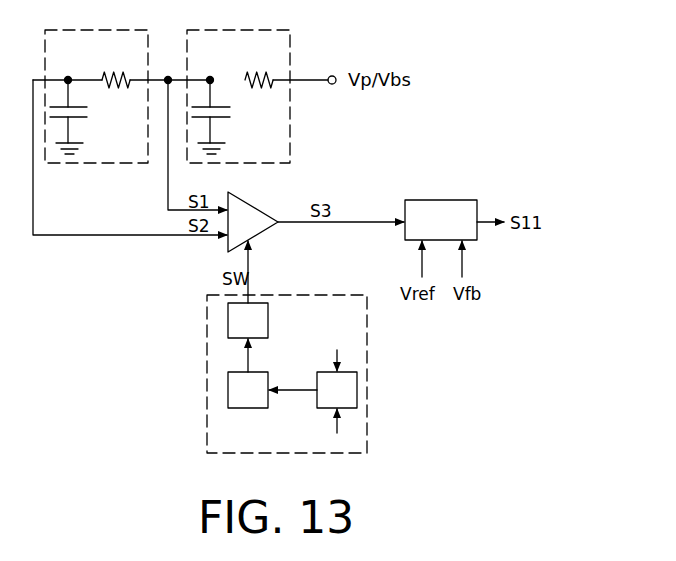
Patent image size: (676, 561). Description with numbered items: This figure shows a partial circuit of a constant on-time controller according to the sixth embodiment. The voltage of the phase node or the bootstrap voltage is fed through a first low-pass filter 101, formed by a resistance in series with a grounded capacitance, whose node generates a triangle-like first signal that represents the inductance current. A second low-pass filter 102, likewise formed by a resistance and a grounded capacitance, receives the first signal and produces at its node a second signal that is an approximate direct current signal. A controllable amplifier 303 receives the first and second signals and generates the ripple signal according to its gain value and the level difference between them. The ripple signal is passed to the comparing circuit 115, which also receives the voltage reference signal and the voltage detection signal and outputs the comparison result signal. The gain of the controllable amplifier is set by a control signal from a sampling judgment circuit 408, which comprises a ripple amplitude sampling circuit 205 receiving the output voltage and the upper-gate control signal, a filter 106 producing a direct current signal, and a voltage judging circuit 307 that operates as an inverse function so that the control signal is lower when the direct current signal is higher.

The low-pass filter 102 is at (94, 29).
The low-pass filter 101 is at (236, 29).
The controllable amplifier 303 is at (265, 214).
The comparing circuit 115 is at (453, 230).
The sampling judgment circuit 408 is at (368, 373).
The voltage judging circuit 307 is at (260, 332).
The filter 106 is at (260, 401).
The ripple amplitude sampling circuit 205 is at (349, 401).